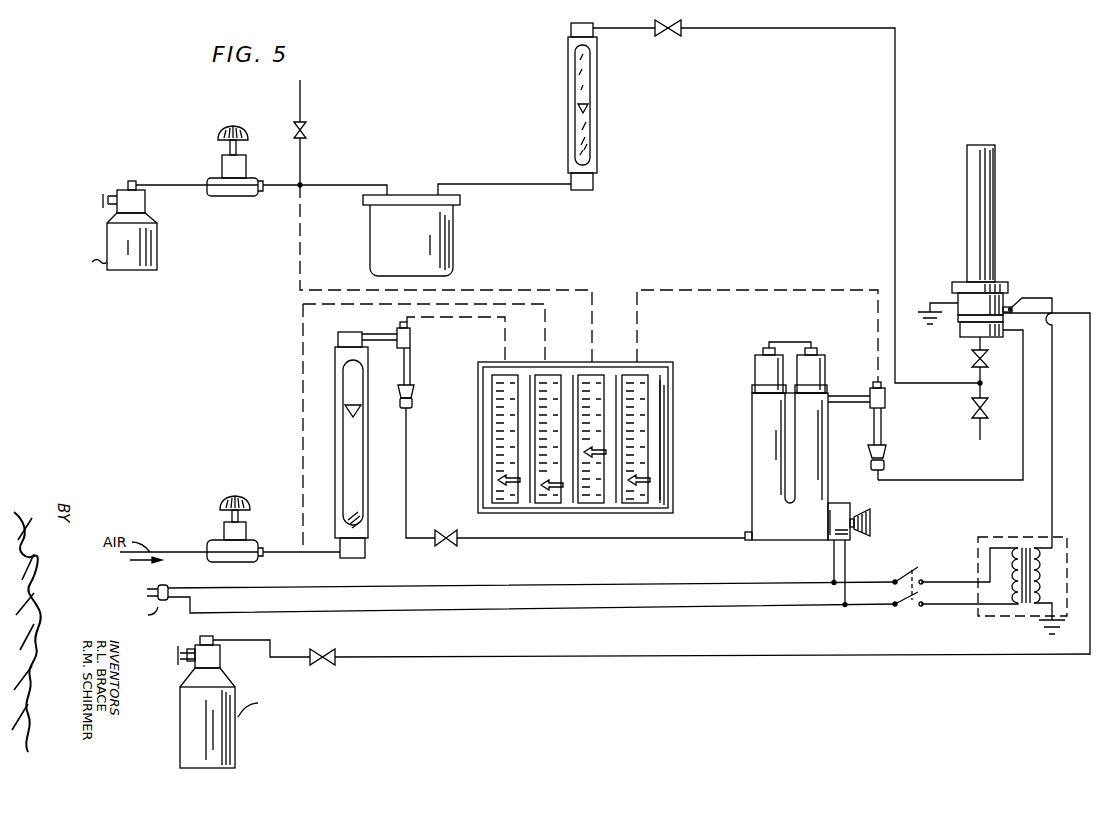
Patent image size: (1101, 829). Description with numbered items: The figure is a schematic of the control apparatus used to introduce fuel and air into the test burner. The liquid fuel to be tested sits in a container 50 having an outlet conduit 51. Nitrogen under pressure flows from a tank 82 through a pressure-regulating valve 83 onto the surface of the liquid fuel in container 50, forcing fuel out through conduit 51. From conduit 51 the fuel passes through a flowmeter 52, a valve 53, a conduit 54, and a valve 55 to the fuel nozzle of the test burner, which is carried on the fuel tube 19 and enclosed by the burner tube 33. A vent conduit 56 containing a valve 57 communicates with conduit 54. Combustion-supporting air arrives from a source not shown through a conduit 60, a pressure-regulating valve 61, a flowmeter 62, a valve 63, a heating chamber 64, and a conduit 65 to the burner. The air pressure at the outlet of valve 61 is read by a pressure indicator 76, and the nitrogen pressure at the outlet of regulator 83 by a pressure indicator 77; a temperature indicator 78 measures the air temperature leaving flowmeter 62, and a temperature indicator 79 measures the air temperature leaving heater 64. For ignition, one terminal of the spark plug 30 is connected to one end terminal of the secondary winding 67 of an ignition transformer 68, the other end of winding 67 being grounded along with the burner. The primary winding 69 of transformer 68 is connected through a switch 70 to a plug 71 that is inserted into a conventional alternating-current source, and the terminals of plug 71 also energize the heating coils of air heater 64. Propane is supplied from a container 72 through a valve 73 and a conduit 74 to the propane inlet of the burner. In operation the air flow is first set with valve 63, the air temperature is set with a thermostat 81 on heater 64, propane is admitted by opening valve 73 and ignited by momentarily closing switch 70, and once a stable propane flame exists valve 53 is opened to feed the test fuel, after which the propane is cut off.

The fuel tube 19 is at (977, 346).
The spark plug 30 is at (1011, 306).
The burner tube 33 is at (995, 153).
The container 50 is at (453, 248).
The outlet conduit 51 is at (510, 182).
The flowmeter 52 is at (568, 46).
The valve 53 is at (666, 20).
The conduit 54 is at (896, 50).
The valve 55 is at (972, 364).
The vent conduit 56 is at (973, 394).
The valve 57 is at (972, 414).
The conduit 60 is at (254, 529).
The pressure-regulating valve 61 is at (258, 542).
The flowmeter 62 is at (364, 440).
The valve 63 is at (442, 533).
The heating chamber 64 is at (758, 512).
The conduit 65 is at (924, 481).
The secondary winding 67 is at (1051, 575).
The ignition transformer 68 is at (994, 571).
The primary winding 69 is at (1011, 578).
The switch 70 is at (902, 568).
The plug 71 is at (168, 585).
The container 72 is at (236, 690).
The valve 73 is at (324, 648).
The conduit 74 is at (369, 656).
The pressure indicator 76 is at (552, 513).
The pressure indicator 77 is at (593, 513).
The temperature indicator 78 is at (505, 513).
The temperature indicator 79 is at (638, 513).
The thermostat 81 is at (868, 528).
The tank 82 is at (157, 254).
The pressure-regulating valve 83 is at (248, 175).